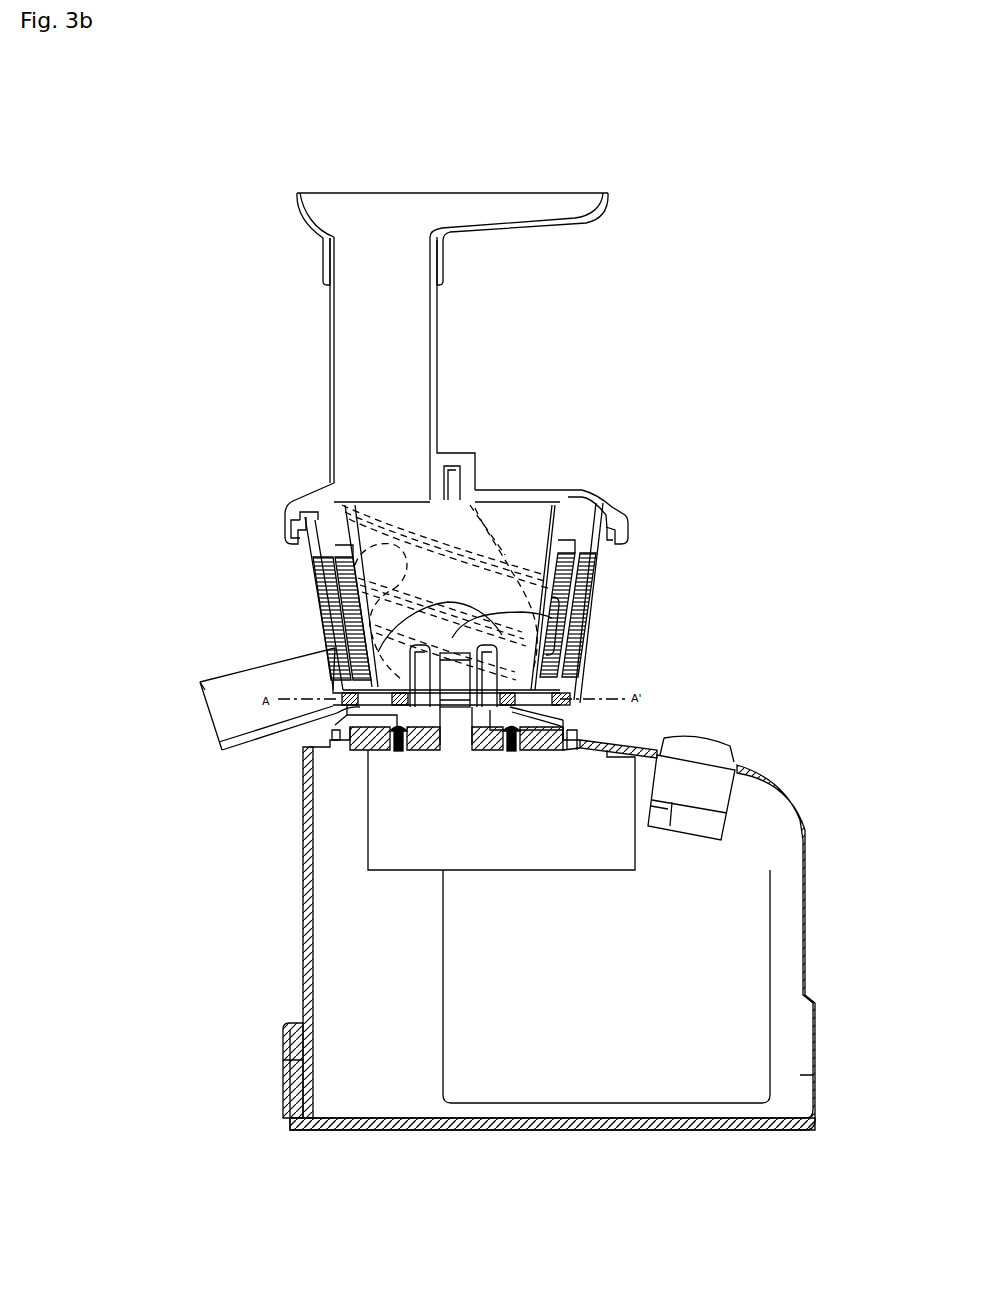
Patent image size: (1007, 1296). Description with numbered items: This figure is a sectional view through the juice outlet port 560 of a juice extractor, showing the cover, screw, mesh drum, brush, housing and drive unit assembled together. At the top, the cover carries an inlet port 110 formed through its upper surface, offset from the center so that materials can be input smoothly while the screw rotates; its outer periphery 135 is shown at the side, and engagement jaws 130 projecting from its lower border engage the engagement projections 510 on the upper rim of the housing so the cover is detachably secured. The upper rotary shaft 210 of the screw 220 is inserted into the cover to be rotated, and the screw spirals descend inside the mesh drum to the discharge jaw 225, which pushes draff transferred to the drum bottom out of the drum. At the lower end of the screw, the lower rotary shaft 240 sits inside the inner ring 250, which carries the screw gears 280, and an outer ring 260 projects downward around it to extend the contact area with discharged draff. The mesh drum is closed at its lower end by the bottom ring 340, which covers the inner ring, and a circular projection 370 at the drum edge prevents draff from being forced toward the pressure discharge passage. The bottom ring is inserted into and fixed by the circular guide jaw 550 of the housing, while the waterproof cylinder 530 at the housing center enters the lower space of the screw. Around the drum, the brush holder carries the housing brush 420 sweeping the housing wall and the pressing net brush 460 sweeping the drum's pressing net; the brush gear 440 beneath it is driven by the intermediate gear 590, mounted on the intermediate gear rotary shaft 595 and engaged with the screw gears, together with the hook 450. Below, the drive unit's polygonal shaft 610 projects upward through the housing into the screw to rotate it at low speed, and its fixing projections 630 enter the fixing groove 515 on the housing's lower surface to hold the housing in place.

The inlet port 110 is at (372, 272).
The engagement jaws 130 is at (287, 548).
The outer periphery 135 is at (622, 512).
The upper rotary shaft 210 is at (455, 485).
The screw 220 is at (500, 558).
The discharge jaw 225 is at (548, 685).
The lower rotary shaft 240 is at (562, 628).
The inner ring 250 is at (563, 720).
The outer ring 260 is at (338, 695).
The screw gears 280 is at (585, 727).
The bottom ring 340 is at (555, 688).
The circular projection 370 is at (580, 703).
The housing brush 420 is at (598, 576).
The brush gear 440 is at (345, 703).
The latch hook 450 is at (600, 556).
The pressing net brush 460 is at (560, 672).
The engagement projections 510 is at (290, 518).
The fixing groove 515 is at (570, 750).
The waterproof cylinder 530 is at (545, 655).
The circular guide jaw 550 is at (505, 688).
The juice outlet port 560 is at (240, 715).
The intermediate gear 590 is at (353, 707).
The intermediate gear rotary shaft 595 is at (363, 720).
The polygonal shaft 610 is at (562, 600).
The fixing projections 630 is at (578, 748).